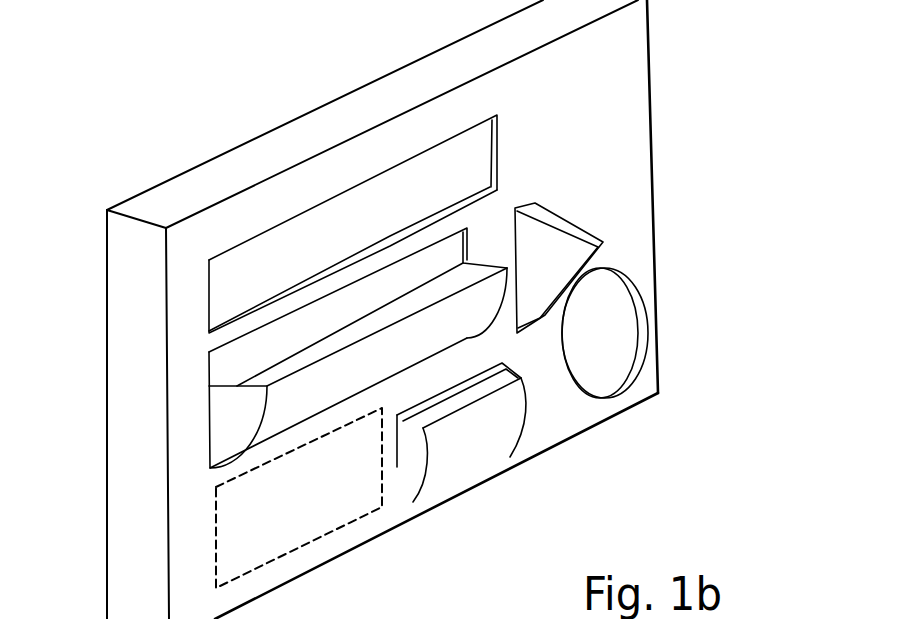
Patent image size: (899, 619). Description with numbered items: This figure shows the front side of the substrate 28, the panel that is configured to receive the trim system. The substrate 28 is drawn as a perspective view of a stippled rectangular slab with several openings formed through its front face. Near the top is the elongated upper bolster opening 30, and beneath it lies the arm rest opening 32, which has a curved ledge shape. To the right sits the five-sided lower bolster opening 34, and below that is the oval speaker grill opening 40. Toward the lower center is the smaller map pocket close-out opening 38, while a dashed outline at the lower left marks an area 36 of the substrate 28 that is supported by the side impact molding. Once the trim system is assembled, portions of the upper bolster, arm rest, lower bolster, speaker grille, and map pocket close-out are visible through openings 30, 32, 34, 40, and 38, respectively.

The substrate 28 is at (708, 77).
The upper bolster opening 30 is at (352, 222).
The arm rest opening 32 is at (285, 337).
The lower bolster opening 34 is at (562, 252).
The area supported by side impact molding 36 is at (320, 537).
The map pocket close-out opening 38 is at (472, 392).
The speaker grill opening 40 is at (597, 332).